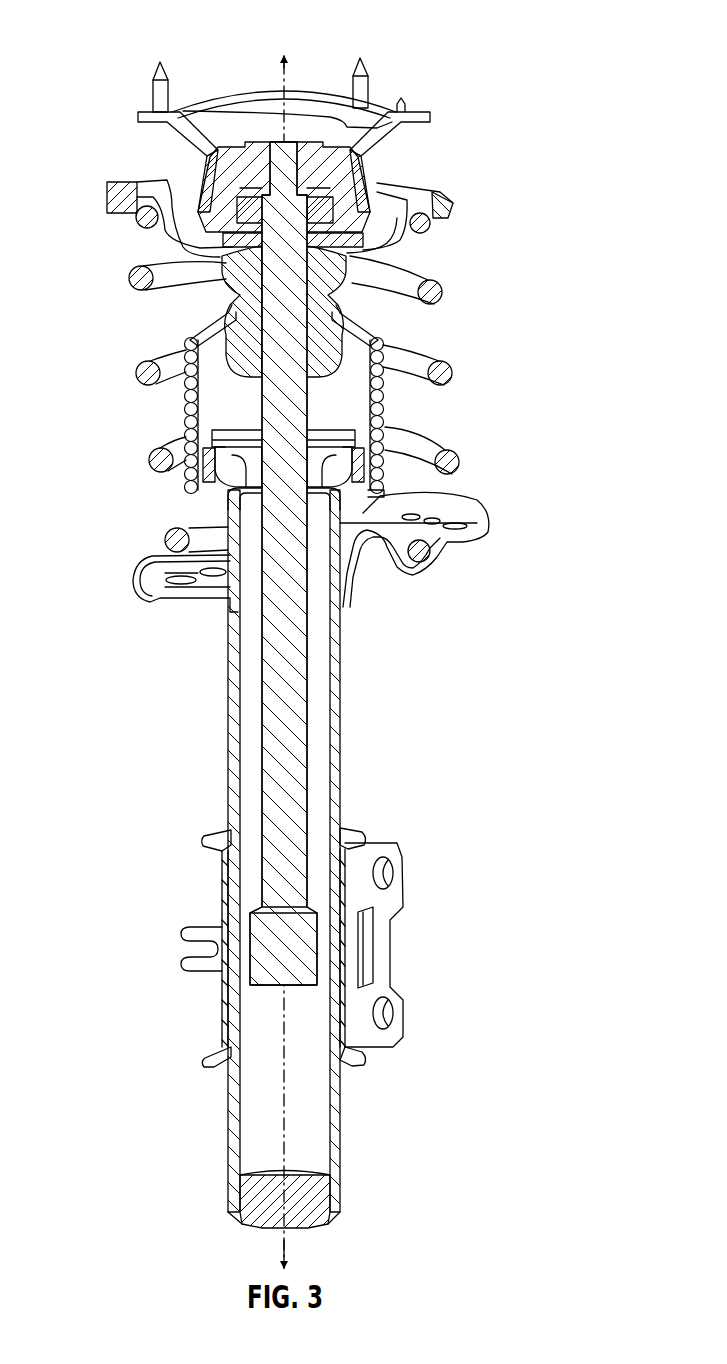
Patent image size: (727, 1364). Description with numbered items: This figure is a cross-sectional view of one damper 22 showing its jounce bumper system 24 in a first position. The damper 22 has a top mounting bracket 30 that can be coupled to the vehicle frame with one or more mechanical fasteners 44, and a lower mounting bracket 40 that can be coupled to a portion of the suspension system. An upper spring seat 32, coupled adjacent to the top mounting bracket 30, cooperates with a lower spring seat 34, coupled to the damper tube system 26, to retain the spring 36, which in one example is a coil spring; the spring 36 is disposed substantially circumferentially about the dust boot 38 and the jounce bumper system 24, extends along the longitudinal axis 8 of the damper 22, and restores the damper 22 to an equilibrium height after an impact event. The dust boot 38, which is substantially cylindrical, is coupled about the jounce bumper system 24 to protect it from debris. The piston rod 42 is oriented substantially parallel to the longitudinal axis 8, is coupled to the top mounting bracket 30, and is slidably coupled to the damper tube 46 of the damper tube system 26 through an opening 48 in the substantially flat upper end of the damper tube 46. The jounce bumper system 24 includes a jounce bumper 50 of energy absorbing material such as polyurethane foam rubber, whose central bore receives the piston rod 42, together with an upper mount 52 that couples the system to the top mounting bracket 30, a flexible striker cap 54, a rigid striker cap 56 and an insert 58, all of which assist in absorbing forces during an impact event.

The damper 22 is at (100, 24).
The jounce bumper system 24 is at (394, 316).
The damper tube system 26 is at (309, 685).
The top mounting bracket 30 is at (274, 136).
The upper spring seat 32 is at (453, 204).
The lower spring seat 34 is at (490, 526).
The spring 36 is at (411, 271).
The dust boot 38 is at (279, 400).
The lower mounting bracket 40 is at (404, 882).
The piston rod 42 is at (300, 713).
The mechanical fasteners 44 is at (160, 64).
The damper tube 46 is at (253, 858).
The opening 48 is at (254, 449).
The jounce bumper 50 is at (208, 302).
The upper mount 52 is at (393, 213).
The flexible striker cap 54 is at (384, 388).
The rigid striker cap 56 is at (381, 471).
The insert 58 is at (313, 445).
The longitudinal axis 8 is at (284, 1250).